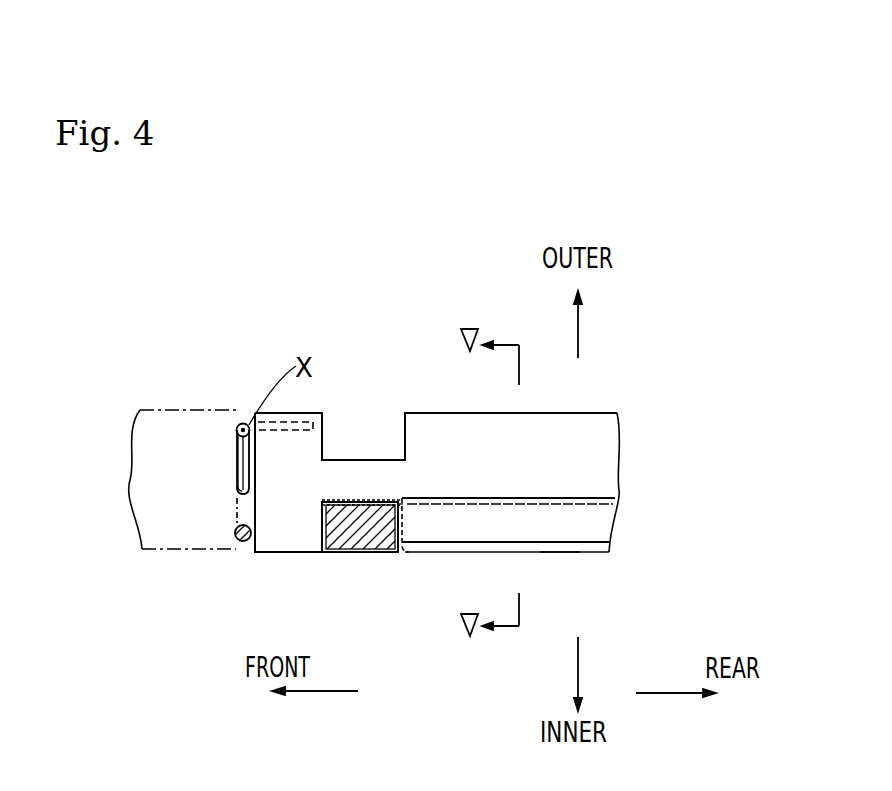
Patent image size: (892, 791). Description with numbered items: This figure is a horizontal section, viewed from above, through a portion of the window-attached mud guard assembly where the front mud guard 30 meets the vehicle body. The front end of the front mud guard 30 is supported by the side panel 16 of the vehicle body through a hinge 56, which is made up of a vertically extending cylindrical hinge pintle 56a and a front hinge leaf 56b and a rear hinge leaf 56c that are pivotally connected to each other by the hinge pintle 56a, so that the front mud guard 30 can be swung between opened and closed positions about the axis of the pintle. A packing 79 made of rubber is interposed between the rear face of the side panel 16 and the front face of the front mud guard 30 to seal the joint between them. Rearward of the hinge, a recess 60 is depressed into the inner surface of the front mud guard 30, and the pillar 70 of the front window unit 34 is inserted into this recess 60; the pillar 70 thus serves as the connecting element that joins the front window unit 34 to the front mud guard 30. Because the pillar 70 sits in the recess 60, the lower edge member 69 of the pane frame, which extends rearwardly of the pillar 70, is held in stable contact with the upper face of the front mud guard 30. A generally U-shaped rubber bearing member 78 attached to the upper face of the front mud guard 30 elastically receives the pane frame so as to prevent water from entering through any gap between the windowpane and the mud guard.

The side panel 16 is at (157, 410).
The front mud guard 30 is at (598, 430).
The front window unit 34 is at (555, 545).
The hinge 56 is at (233, 414).
The hinge pintle 56a is at (243, 423).
The front hinge leaf 56b is at (238, 490).
The rear hinge leaf 56c is at (300, 411).
The recess 60 is at (372, 503).
The lower edge member 69 is at (590, 530).
The pillar 70 is at (352, 546).
The bearing member 78 is at (605, 498).
The packing 79 is at (243, 548).